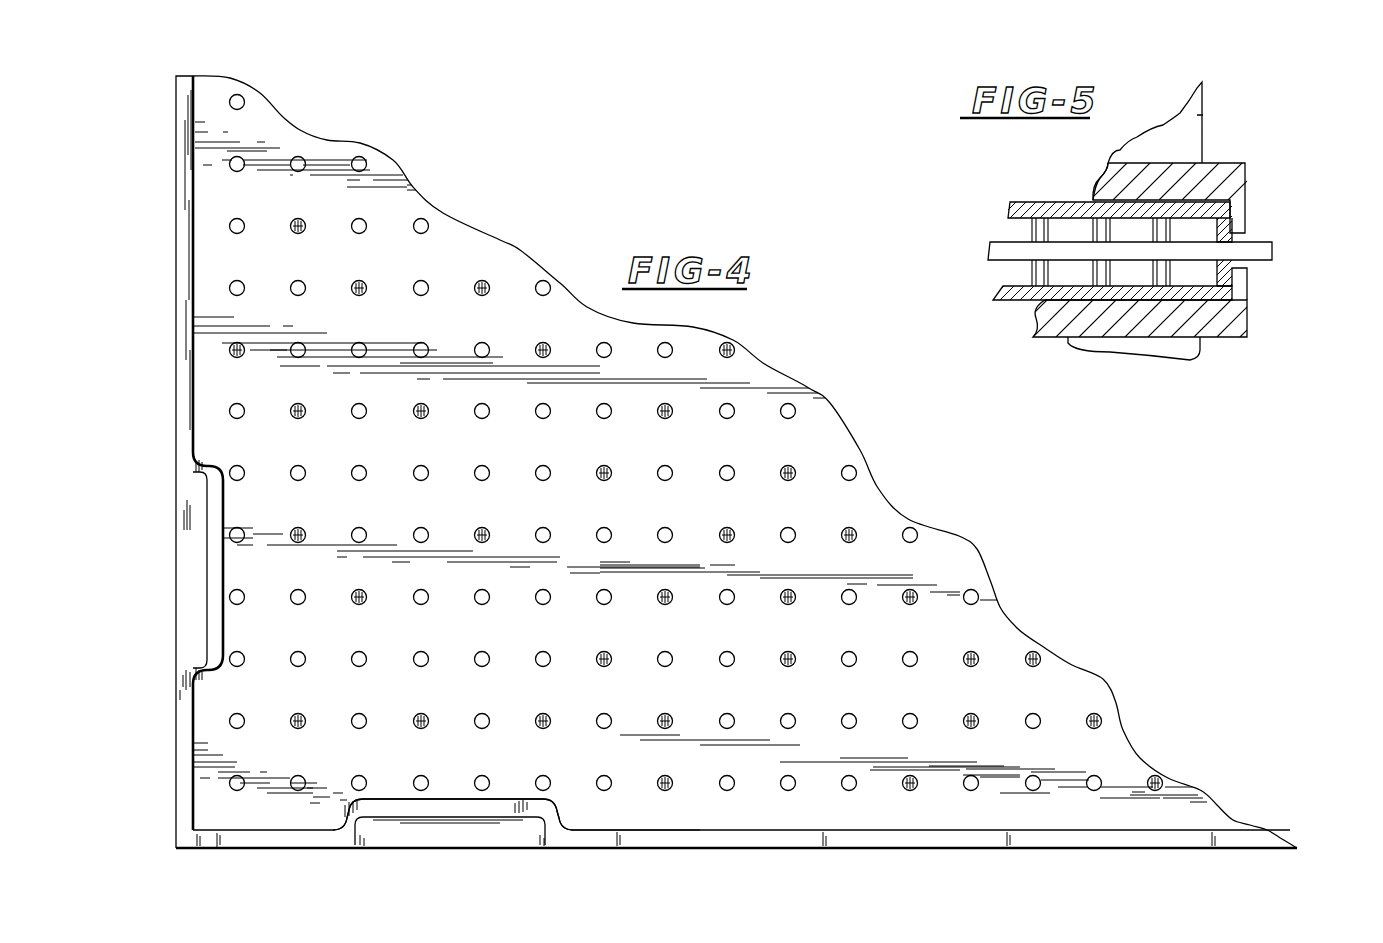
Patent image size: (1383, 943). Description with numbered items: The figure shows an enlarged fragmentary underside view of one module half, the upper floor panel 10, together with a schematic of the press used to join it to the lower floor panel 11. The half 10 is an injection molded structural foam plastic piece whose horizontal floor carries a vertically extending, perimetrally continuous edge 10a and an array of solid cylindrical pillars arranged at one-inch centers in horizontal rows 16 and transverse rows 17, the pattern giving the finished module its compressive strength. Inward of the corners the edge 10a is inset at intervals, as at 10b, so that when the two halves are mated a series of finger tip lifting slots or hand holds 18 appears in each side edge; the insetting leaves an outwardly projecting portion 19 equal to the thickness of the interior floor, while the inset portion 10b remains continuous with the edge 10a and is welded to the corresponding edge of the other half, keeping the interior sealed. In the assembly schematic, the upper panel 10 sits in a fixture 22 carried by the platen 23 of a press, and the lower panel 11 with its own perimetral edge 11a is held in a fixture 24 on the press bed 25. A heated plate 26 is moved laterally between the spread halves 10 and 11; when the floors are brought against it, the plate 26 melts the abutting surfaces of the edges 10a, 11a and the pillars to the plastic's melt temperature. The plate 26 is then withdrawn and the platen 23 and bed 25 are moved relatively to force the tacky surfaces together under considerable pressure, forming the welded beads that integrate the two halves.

In FIG. 4, the upper floor panel 10 is at (1025, 617).
In FIG. 5, the upper floor panel 10 is at (1220, 202).
In FIG. 4, the perimetral edge 10a is at (745, 838).
In FIG. 5, the perimetral edge 10a is at (1223, 227).
In FIG. 4, the inset edge portion 10b is at (450, 785).
In FIG. 5, the lower floor panel 11 is at (1250, 295).
In FIG. 5, the perimetral edge 11a is at (1250, 277).
In FIG. 4, the horizontal rows 16 is at (1120, 776).
In FIG. 4, the transverse rows 17 is at (262, 92).
In FIG. 4, the finger tip lifting slot 18 is at (178, 608).
In FIG. 4, the outwardly projecting portion 19 is at (472, 838).
In FIG. 5, the fixture 22 is at (1210, 173).
In FIG. 5, the platen 23 is at (1197, 117).
In FIG. 5, the fixture 24 is at (1247, 313).
In FIG. 5, the bed 25 is at (1200, 350).
In FIG. 5, the heated plate 26 is at (1272, 248).